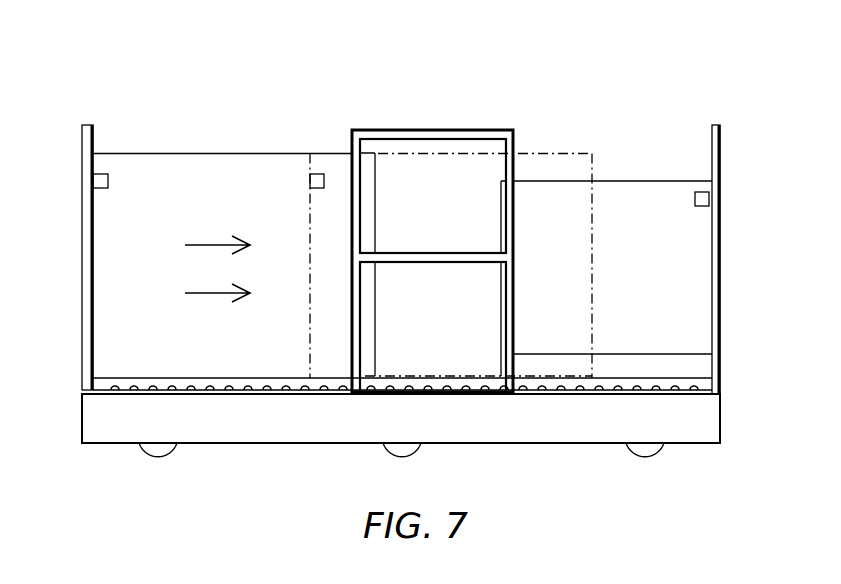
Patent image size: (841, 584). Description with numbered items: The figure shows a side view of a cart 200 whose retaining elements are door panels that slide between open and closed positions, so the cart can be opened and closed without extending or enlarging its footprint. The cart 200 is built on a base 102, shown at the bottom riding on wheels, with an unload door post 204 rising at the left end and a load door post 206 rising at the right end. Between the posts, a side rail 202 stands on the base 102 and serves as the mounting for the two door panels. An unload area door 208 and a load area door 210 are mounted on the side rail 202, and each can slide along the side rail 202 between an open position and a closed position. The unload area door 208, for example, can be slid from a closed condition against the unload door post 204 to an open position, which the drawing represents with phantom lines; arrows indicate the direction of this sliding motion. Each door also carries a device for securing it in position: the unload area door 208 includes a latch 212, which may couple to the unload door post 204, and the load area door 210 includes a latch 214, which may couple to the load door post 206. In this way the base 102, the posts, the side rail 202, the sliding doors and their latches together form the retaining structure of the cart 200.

The cart 200 is at (182, 62).
The base 102 is at (661, 434).
The unload door post 204 is at (94, 126).
The load door post 206 is at (713, 126).
The side rail 202 is at (374, 130).
The unload area door 208 is at (204, 354).
The load area door 210 is at (636, 289).
The latch 212 is at (95, 186).
The latch 214 is at (716, 199).